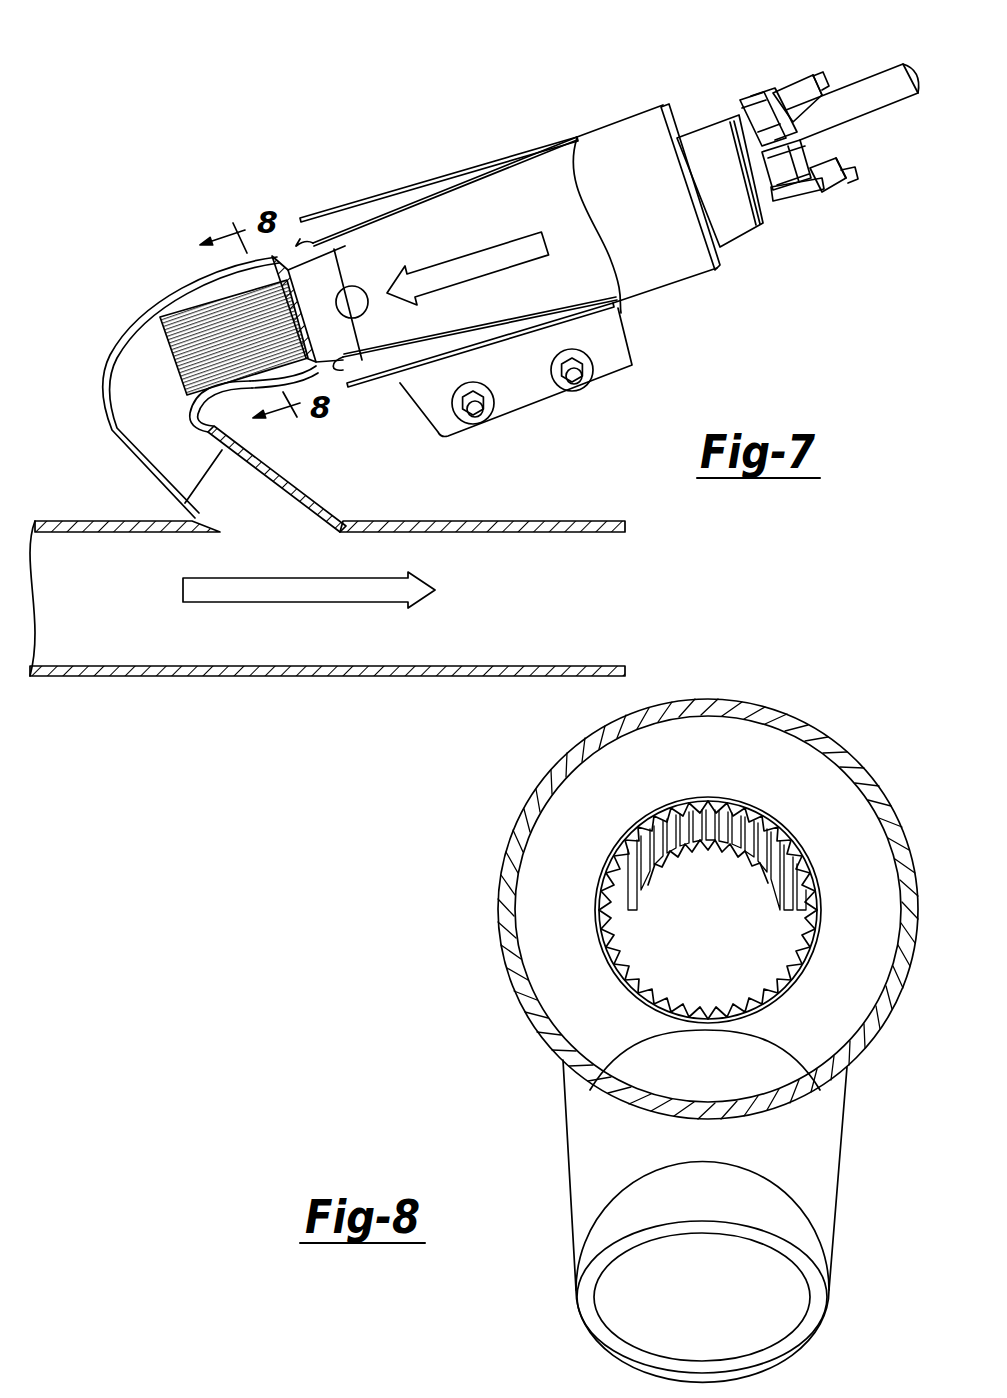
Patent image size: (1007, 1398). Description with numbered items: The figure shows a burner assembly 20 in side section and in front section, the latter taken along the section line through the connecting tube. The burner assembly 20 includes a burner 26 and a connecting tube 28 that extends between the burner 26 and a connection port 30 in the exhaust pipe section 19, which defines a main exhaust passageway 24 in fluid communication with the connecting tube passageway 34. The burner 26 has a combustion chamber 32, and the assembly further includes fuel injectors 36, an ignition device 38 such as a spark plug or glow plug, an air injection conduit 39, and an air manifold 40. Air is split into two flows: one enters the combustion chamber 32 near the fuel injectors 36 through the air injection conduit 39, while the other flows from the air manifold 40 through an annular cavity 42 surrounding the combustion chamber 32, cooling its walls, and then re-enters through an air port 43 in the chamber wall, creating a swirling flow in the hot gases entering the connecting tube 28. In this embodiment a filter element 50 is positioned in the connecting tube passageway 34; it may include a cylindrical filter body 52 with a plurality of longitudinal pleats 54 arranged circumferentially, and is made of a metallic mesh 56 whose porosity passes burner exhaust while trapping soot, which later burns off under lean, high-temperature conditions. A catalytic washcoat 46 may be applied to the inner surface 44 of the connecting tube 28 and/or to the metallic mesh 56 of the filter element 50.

In FIG. 7, the exhaust pipe section 19 is at (80, 677).
In FIG. 7, the burner assembly 20 is at (199, 184).
In FIG. 7, the main exhaust passageway 24 is at (533, 622).
In FIG. 7, the burner 26 is at (603, 157).
In FIG. 7, the connecting tube 28 is at (135, 335).
In FIG. 8, the connecting tube 28 is at (493, 994).
In FIG. 7, the connection port 30 is at (265, 506).
In FIG. 7, the combustion chamber 32 is at (525, 213).
In FIG. 7, the connecting tube passageway 34 is at (175, 428).
In FIG. 7, the fuel injectors 36 is at (788, 90).
In FIG. 7, the ignition device 38 is at (820, 167).
In FIG. 7, the air injection conduit 39 is at (800, 217).
In FIG. 7, the air manifold 40 is at (853, 97).
In FIG. 7, the annular cavity 42 is at (327, 220).
In FIG. 7, the air port 43 is at (370, 306).
In FIG. 7, the inner surface 44 is at (143, 458).
In FIG. 8, the inner surface 44 is at (683, 1072).
In FIG. 8, the catalytic washcoat 46 is at (741, 801).
In FIG. 7, the filter element 50 is at (155, 362).
In FIG. 8, the filter element 50 is at (612, 846).
In FIG. 7, the cylindrical filter body 52 is at (270, 258).
In FIG. 8, the cylindrical filter body 52 is at (786, 824).
In FIG. 7, the longitudinal pleats 54 is at (185, 347).
In FIG. 8, the longitudinal pleats 54 is at (760, 987).
In FIG. 8, the metallic mesh 56 is at (648, 838).